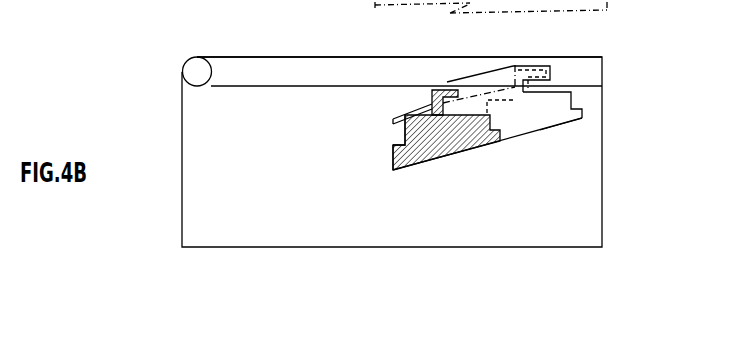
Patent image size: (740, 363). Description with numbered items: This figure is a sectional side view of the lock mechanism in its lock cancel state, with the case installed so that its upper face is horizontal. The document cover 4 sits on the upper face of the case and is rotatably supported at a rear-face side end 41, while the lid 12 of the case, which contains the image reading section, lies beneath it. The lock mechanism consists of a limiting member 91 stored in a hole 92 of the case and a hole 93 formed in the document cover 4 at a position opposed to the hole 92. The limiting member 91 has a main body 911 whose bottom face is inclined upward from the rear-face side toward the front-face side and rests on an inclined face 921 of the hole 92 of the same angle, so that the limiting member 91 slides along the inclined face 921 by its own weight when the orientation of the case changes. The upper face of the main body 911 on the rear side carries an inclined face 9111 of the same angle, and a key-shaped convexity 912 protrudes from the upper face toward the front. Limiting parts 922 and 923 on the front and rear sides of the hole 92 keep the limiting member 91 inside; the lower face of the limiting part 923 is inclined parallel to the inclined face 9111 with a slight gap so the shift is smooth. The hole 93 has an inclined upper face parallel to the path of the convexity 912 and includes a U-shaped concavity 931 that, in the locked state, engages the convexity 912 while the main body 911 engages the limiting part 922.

The document cover 4 is at (251, 63).
The rear-face side end 41 is at (200, 63).
The lid 12 is at (213, 159).
The limiting member 91 is at (540, 115).
The main body 911 is at (470, 140).
The convexity 912 is at (430, 123).
The inclined face 9111 is at (393, 170).
The hole 92 is at (421, 99).
The inclined face 921 is at (560, 127).
The limiting part 922 is at (556, 90).
The limiting part 923 is at (395, 118).
The hole 93 is at (506, 74).
The U-shaped concavity 931 is at (542, 73).